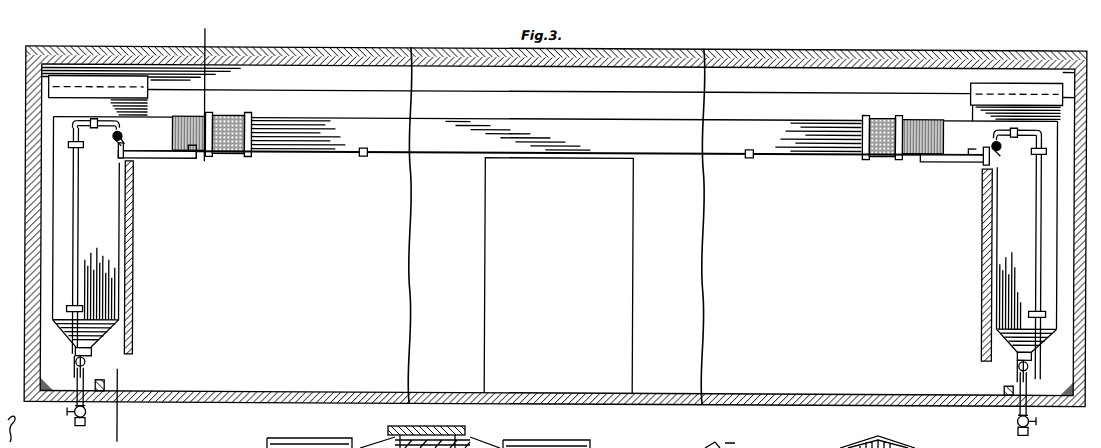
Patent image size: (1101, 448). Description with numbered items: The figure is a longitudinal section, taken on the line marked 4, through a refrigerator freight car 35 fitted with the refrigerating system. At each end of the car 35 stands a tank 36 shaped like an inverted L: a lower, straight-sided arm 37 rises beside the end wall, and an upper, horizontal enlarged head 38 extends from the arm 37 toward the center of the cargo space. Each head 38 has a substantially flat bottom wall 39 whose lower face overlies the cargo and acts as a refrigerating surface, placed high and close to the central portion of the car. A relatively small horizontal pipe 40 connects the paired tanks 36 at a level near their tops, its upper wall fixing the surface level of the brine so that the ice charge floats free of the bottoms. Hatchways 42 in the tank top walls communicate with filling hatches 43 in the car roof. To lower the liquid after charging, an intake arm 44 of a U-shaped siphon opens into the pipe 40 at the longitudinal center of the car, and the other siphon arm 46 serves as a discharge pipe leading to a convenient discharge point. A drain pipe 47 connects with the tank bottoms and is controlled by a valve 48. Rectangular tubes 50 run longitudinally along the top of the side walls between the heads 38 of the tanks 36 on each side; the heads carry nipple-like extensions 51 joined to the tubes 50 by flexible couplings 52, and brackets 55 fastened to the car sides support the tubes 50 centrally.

The section line 4- 4 is at (116, 431).
The freight car 35 is at (645, 404).
The tanks 36 is at (97, 260).
The lower straight-sided arm 37 is at (100, 300).
The enlarged head 38 is at (147, 153).
The bottom wall 39 is at (162, 155).
The horizontal pipe 40 is at (123, 139).
The hatchways 42 is at (141, 108).
The filling hatches 43 is at (133, 80).
The intake arm 44 is at (113, 141).
The discharge arm 46 is at (78, 203).
The drain pipe 47 is at (77, 363).
The valve 48 is at (78, 419).
The rectangular tubes 50 is at (797, 155).
The extensions 51 is at (209, 117).
The flexible couplings 52 is at (232, 135).
The brackets 55 is at (364, 158).